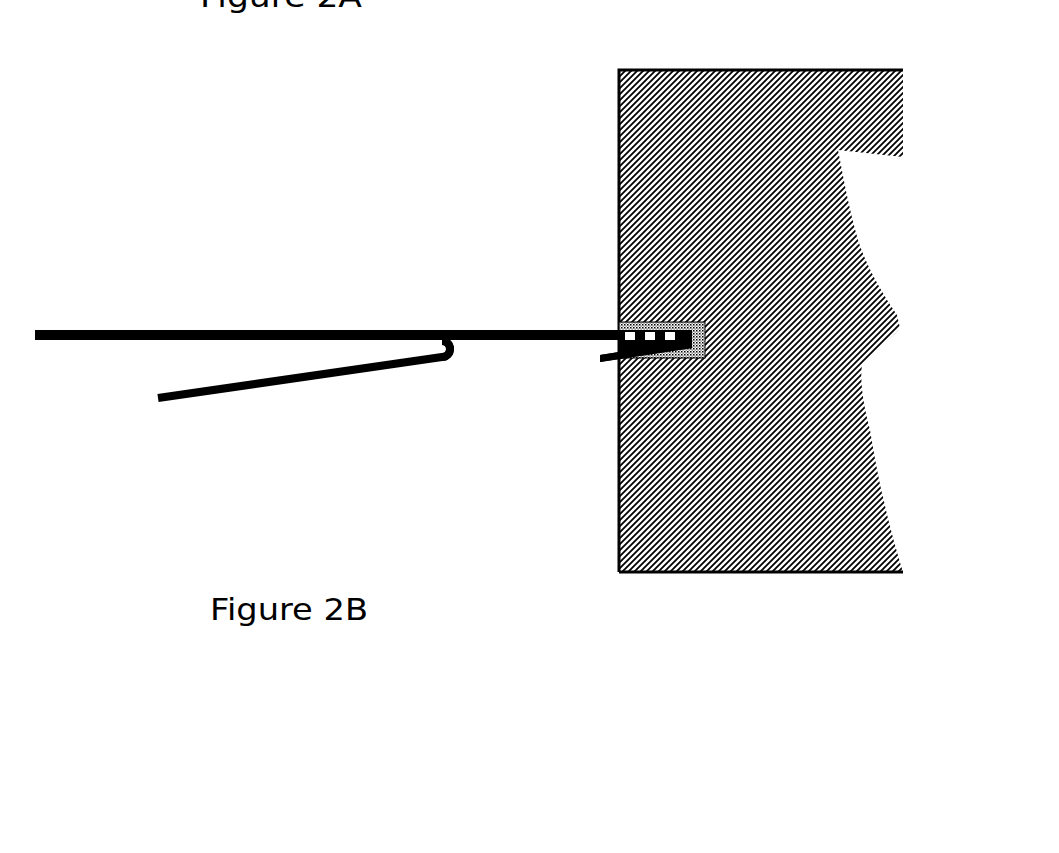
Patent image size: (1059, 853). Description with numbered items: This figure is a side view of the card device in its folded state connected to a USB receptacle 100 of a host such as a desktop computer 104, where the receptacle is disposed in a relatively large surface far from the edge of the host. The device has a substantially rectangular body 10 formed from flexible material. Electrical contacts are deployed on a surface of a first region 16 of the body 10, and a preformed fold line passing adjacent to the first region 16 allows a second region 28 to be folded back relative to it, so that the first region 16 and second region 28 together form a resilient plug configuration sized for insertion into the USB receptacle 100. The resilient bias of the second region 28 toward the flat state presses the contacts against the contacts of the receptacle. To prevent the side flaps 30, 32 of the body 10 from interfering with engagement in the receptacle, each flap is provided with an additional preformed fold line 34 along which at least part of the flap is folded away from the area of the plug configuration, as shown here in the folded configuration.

The body 10 is at (152, 339).
The first region 16 is at (560, 340).
The second region 28 is at (606, 362).
The side flap 30 is at (304, 393).
The side flap 32 is at (255, 389).
The additional preformed fold line 34 is at (447, 362).
The USB receptacle 100 is at (707, 338).
The desktop computer 104 is at (788, 575).